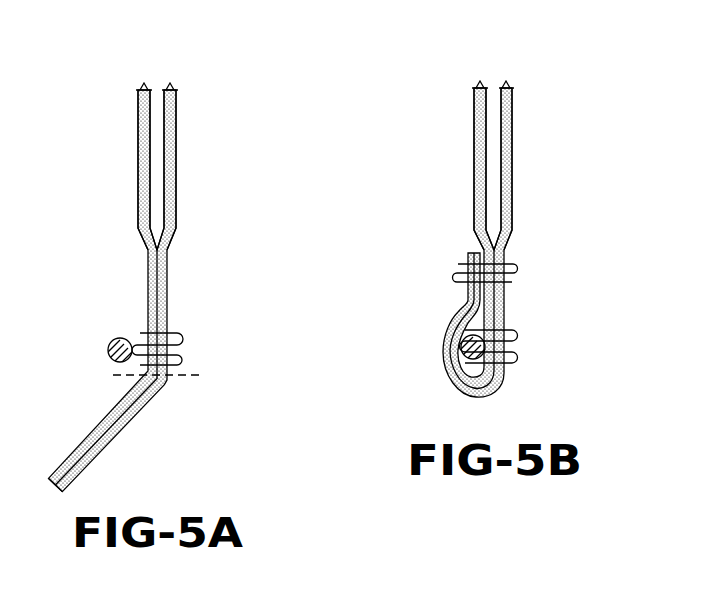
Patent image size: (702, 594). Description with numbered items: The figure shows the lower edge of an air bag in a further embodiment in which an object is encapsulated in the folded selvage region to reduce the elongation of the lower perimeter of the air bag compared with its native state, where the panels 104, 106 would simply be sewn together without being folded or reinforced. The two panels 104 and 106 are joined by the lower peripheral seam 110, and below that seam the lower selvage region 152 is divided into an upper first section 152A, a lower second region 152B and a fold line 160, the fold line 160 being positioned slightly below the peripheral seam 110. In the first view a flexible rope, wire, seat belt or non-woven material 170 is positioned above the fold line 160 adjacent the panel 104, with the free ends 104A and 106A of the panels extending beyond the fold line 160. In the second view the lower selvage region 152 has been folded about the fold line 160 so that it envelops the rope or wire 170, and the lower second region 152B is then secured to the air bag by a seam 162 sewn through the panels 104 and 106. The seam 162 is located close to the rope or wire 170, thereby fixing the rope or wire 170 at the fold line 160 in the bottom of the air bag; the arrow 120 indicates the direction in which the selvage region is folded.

In FIG. 5A, the panel 104 is at (142, 150).
In FIG. 5B, the panel 104 is at (478, 173).
In FIG. 5A, the panel 106 is at (177, 150).
In FIG. 5B, the panel 106 is at (513, 172).
In FIG. 5A, the flow direction 120 is at (157, 182).
In FIG. 5B, the flow direction 120 is at (494, 100).
In FIG. 5A, the lower selvage region 152 is at (143, 295).
In FIG. 5B, the lower selvage region 152 is at (443, 308).
In FIG. 5A, the upper first section 152A is at (173, 368).
In FIG. 5A, the lower second region 152B is at (127, 427).
In FIG. 5A, the end of first tube 104A is at (95, 432).
In FIG. 5A, the end of second tube 106A is at (80, 463).
In FIG. 5A, the lower peripheral seam 110 is at (167, 332).
In FIG. 5B, the lower peripheral seam 110 is at (507, 328).
In FIG. 5A, the rope or wire 170 is at (118, 338).
In FIG. 5B, the rope or wire 170 is at (453, 373).
In FIG. 5A, the fold line 160 is at (177, 377).
In FIG. 5B, the seam 162 is at (463, 265).